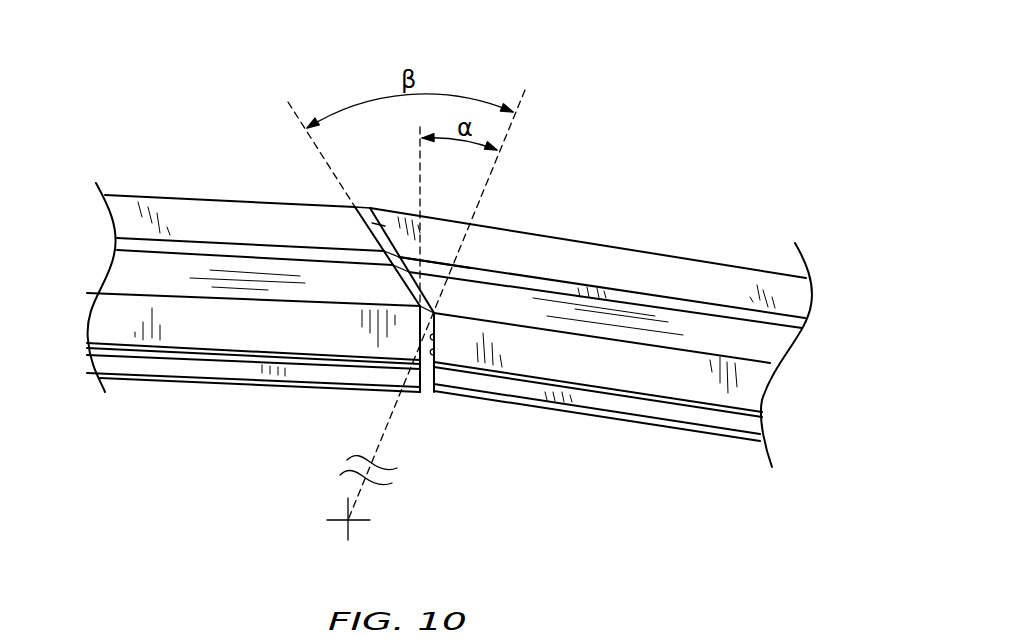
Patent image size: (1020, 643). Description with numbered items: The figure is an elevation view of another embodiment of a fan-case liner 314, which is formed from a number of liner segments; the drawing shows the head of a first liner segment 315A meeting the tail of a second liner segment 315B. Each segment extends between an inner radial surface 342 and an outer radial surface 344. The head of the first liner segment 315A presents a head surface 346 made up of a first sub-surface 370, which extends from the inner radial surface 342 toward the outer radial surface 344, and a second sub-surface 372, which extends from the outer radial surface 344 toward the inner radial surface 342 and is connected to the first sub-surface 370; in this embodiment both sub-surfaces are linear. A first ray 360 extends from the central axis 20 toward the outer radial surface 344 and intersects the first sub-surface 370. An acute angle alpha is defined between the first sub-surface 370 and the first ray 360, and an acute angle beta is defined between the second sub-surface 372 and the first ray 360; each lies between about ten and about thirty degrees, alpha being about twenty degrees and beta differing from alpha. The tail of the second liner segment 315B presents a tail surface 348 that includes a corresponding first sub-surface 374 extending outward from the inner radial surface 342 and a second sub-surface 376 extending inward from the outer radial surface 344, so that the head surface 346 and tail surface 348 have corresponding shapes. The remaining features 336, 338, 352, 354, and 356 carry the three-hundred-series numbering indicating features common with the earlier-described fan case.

The reference axis 20 is at (350, 523).
The liner 314 is at (606, 158).
The first liner segment 315A is at (236, 194).
The second liner segment 315B is at (673, 238).
The bottom edge of first panel 336 is at (412, 408).
The bottom edge of second panel 338 is at (475, 408).
The inner radial surface 342 is at (147, 376).
The outer radial surface 344 is at (128, 194).
The head surface 346 is at (442, 267).
The tail surface 348 is at (437, 336).
The core layer 352 is at (158, 282).
The side surface of first panel 354 is at (360, 298).
The top surface of second panel 356 is at (527, 300).
The first ray 360 is at (493, 165).
The first sub-surface 370 is at (433, 314).
The second sub-surface 372 is at (383, 214).
The first sub-surface 374 is at (437, 353).
The second sub-surface 376 is at (377, 242).